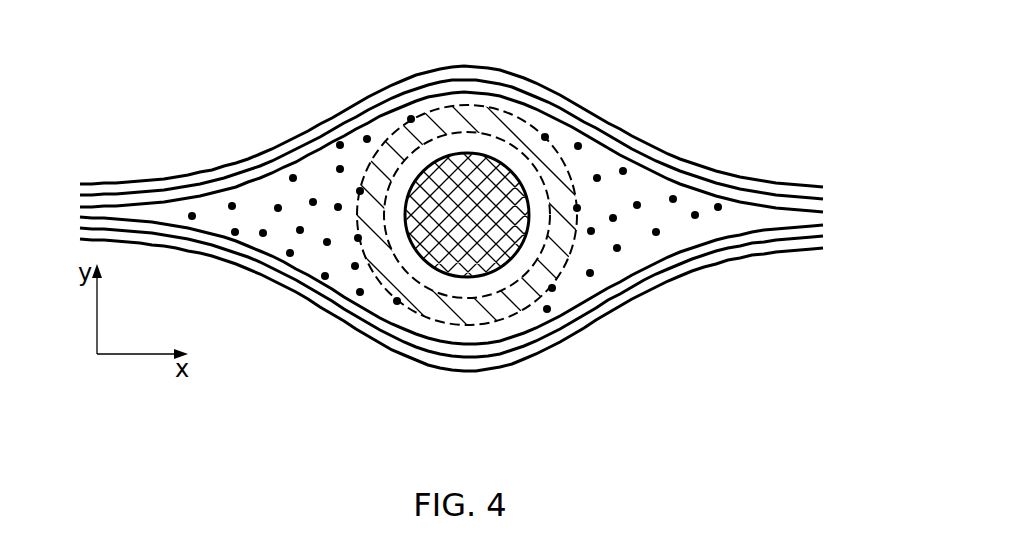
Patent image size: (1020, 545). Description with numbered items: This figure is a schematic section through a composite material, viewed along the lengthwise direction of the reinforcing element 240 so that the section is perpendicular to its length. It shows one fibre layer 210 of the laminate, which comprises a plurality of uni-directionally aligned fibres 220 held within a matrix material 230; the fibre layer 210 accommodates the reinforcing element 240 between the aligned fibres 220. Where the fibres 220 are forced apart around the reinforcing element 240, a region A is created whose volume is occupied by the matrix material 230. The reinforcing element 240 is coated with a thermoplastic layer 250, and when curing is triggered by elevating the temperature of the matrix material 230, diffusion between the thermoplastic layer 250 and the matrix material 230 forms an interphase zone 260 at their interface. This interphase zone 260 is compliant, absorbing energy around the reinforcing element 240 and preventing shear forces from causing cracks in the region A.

The fibre layer 210 is at (718, 141).
The uni-directionally aligned fibres 220 is at (220, 162).
The matrix material 230 is at (282, 238).
The reinforcing element 240 is at (483, 173).
The thermoplastic layer 250 is at (418, 158).
The interphase zone 260 is at (473, 312).
The region A is at (603, 193).